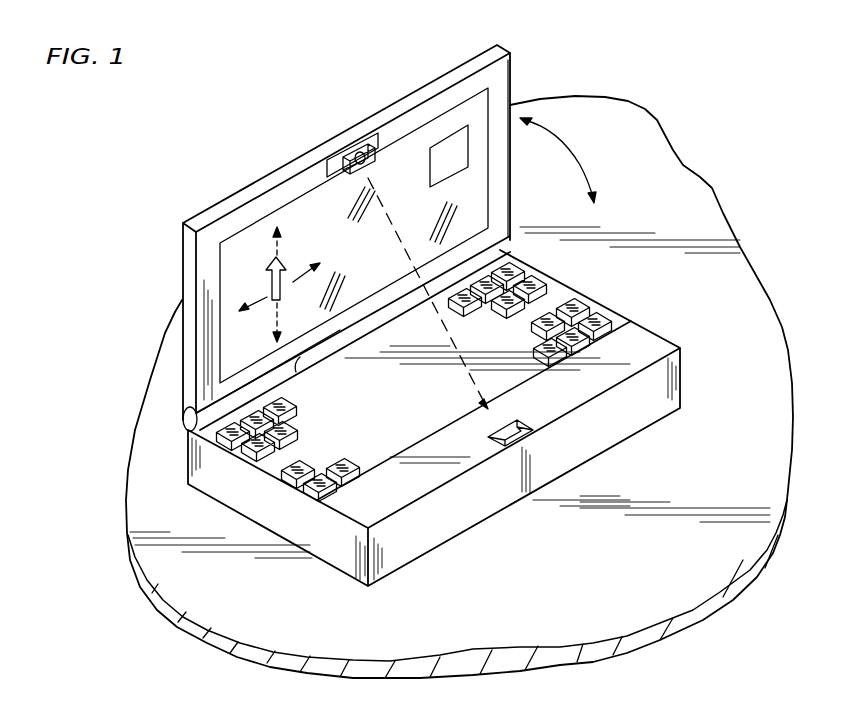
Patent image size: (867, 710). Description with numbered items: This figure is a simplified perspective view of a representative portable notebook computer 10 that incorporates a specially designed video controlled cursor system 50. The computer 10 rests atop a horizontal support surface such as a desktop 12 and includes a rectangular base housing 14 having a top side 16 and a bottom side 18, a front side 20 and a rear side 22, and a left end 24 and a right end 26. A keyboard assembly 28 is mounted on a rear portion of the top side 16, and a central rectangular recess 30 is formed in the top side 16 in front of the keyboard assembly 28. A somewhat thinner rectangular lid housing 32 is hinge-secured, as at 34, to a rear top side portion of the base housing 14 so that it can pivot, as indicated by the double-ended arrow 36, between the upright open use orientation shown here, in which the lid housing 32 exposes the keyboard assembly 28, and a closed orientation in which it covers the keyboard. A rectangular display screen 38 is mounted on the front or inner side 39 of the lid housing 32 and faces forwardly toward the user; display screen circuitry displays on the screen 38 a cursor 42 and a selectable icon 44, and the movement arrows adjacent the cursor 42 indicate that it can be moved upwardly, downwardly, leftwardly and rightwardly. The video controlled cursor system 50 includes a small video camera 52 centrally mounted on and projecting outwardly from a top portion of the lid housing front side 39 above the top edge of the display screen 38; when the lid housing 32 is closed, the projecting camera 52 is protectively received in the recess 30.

The portable notebook computer 10 is at (215, 516).
The desktop 12 is at (681, 284).
The base housing 14 is at (665, 328).
The top side 16 is at (373, 500).
The bottom side 18 is at (400, 573).
The front side 20 is at (593, 432).
The rear side 22 is at (183, 452).
The left end 24 is at (283, 515).
The right end 26 is at (684, 387).
The keyboard assembly 28 is at (334, 432).
The central rectangular recess 30 is at (518, 422).
The lid housing 32 is at (186, 290).
The hinge 34 is at (186, 418).
The double-ended arrow 36 is at (572, 149).
The display screen 38 is at (467, 207).
The front side of lid housing 39 is at (280, 197).
The cursor 42 is at (280, 263).
The selectable icon 44 is at (457, 147).
The video controlled cursor system 50 is at (338, 124).
The video camera 52 is at (358, 150).